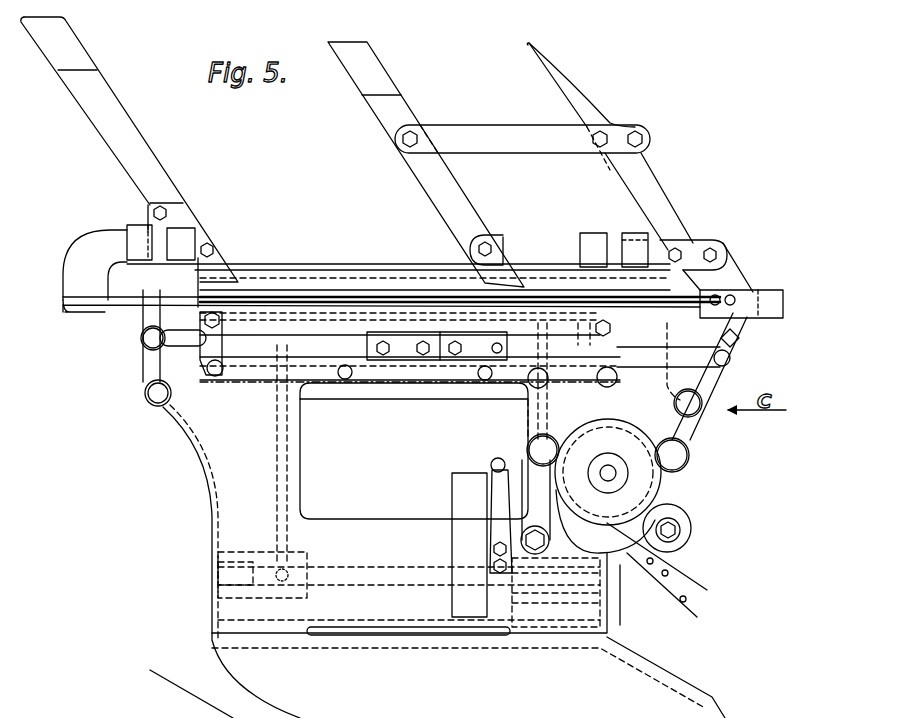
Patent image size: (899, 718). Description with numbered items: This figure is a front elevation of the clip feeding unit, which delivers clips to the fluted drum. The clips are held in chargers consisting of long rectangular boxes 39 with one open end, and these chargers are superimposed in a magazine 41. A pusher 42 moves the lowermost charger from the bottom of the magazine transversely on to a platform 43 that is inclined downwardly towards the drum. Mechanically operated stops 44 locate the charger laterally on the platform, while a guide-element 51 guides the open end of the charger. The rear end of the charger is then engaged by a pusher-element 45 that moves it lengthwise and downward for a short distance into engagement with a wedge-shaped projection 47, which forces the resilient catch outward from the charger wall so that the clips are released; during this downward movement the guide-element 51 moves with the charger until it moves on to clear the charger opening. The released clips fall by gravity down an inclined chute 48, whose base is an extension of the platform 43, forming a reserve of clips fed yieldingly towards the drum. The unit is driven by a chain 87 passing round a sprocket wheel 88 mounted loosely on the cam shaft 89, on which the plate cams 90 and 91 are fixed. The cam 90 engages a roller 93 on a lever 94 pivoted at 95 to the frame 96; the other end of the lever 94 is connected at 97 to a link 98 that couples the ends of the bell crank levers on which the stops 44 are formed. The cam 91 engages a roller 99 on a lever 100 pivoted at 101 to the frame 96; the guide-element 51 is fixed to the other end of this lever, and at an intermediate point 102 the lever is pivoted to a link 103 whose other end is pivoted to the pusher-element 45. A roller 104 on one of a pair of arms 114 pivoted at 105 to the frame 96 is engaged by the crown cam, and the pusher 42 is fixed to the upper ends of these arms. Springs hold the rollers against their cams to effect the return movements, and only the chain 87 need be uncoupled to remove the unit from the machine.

The rectangular boxes 39 is at (305, 266).
The magazine 41 is at (357, 150).
The pusher 42 is at (352, 296).
The platform 43 is at (133, 304).
The stops 44 is at (240, 336).
The pusher-element 45 is at (147, 300).
The projection 47 is at (683, 303).
The chute 48 is at (777, 305).
The guide-element 51 is at (732, 330).
The chain 87 is at (705, 592).
The sprocket wheel 88 is at (592, 432).
The cam shaft 89 is at (608, 470).
The plate cam 90 is at (622, 428).
The plate cam 91 is at (656, 518).
The roller 93 is at (529, 447).
The lever 94 is at (528, 418).
The pivot 95 is at (520, 538).
The frame 96 is at (395, 526).
The connection 97 is at (558, 426).
The link 98 is at (317, 372).
The roller 99 is at (690, 456).
The lever 100 is at (697, 437).
The pivot 101 is at (699, 409).
The intermediate point 102 is at (731, 358).
The link 103 is at (360, 352).
The roller 104 is at (555, 536).
The pivot 105 is at (337, 570).
The arms 114 is at (290, 462).